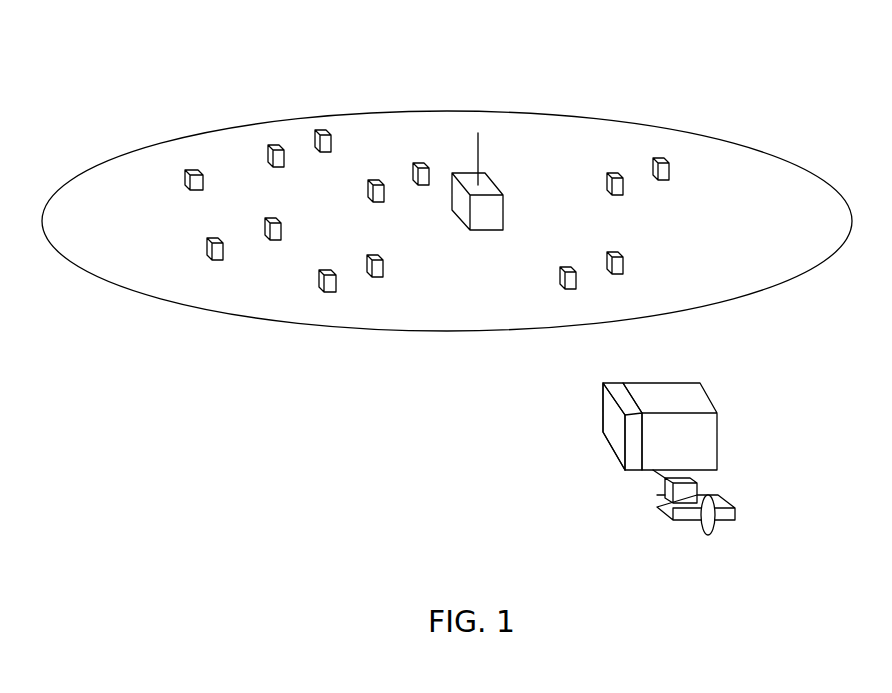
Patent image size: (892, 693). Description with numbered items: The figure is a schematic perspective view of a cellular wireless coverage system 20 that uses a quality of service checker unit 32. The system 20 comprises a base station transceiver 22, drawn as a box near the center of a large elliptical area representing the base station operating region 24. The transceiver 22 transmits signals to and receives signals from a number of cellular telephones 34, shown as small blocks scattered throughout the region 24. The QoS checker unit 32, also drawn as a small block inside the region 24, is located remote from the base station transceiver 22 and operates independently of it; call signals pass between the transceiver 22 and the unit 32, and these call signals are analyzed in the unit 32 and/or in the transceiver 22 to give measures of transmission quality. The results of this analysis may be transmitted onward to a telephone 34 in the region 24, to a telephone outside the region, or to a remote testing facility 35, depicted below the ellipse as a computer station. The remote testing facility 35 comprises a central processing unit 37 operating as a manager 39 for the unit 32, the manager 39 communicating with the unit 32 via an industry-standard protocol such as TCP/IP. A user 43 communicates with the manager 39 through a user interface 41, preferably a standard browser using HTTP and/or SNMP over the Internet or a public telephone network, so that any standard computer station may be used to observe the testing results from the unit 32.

The cellular wireless coverage system 20 is at (401, 86).
The base station transceiver 22 is at (495, 182).
The base station operating region 24 is at (753, 148).
The quality of service checker unit 32 is at (197, 192).
The cellular telephones 34 is at (278, 168).
The remote testing facility 35 is at (697, 407).
The central processing unit 37 is at (618, 422).
The manager 39 is at (632, 443).
The user interface 41 is at (658, 497).
The user 43 is at (710, 535).